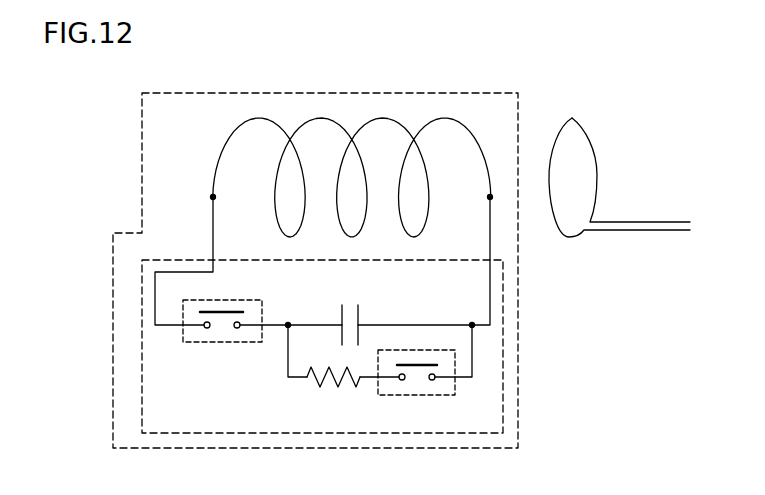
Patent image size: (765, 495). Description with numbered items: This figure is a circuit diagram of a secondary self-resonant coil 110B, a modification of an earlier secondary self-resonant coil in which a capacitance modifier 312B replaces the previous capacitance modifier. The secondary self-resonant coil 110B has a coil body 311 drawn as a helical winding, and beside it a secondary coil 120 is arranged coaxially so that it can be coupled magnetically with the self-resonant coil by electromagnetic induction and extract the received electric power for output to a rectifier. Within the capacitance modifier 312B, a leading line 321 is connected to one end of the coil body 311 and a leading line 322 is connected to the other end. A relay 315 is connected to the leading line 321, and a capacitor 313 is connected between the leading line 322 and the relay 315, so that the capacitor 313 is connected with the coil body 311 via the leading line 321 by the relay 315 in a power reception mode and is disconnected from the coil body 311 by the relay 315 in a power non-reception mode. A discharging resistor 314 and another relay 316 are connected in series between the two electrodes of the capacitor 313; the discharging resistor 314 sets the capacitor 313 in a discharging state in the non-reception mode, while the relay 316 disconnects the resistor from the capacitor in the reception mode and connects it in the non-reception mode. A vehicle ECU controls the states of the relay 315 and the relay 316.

The secondary self-resonant coil 110B is at (142, 117).
The coil body 311 is at (345, 118).
The secondary coil 120 is at (572, 116).
The leading line 321 is at (155, 294).
The leading line 322 is at (492, 296).
The capacitance modifier 312B is at (142, 372).
The capacitor 313 is at (346, 305).
The discharging resistor 314 is at (331, 387).
The relay 315 is at (226, 343).
The another relay 316 is at (422, 397).